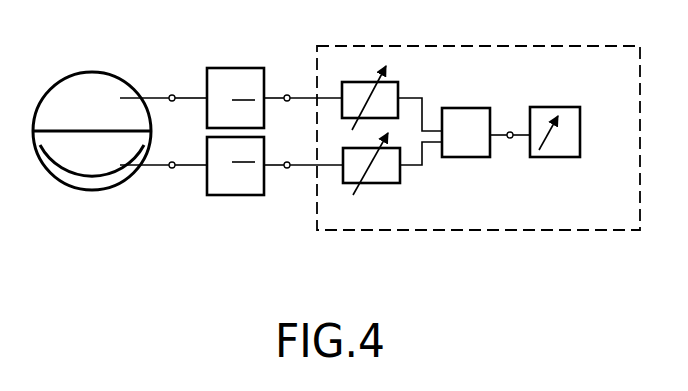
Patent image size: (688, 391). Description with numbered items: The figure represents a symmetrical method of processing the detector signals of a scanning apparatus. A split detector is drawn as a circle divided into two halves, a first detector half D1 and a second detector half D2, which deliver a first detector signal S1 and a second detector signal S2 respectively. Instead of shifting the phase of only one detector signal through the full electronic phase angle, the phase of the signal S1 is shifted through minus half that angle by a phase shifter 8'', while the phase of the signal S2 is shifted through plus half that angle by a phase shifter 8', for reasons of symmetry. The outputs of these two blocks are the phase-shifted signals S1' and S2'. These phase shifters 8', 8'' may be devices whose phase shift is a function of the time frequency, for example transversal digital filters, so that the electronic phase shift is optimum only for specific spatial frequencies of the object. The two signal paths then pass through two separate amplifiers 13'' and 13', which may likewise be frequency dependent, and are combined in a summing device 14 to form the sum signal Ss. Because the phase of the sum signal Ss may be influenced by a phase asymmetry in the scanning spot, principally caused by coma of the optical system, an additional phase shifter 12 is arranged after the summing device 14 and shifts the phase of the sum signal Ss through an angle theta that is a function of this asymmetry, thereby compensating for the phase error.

The first detector half D1 is at (94, 83).
The second detector half D2 is at (82, 172).
The first detector signal S1 is at (163, 114).
The second detector signal S2 is at (163, 181).
The phase shifter 8'' is at (235, 79).
The phase shifter 8' is at (235, 194).
The first phase-shifted signal S1' is at (303, 79).
The second phase-shifted signal S2' is at (303, 185).
The amplifier 13'' is at (392, 69).
The amplifier 13' is at (392, 201).
The summing device 14 is at (465, 157).
The sum signal Ss is at (510, 138).
The additional phase shifter 12 is at (560, 157).